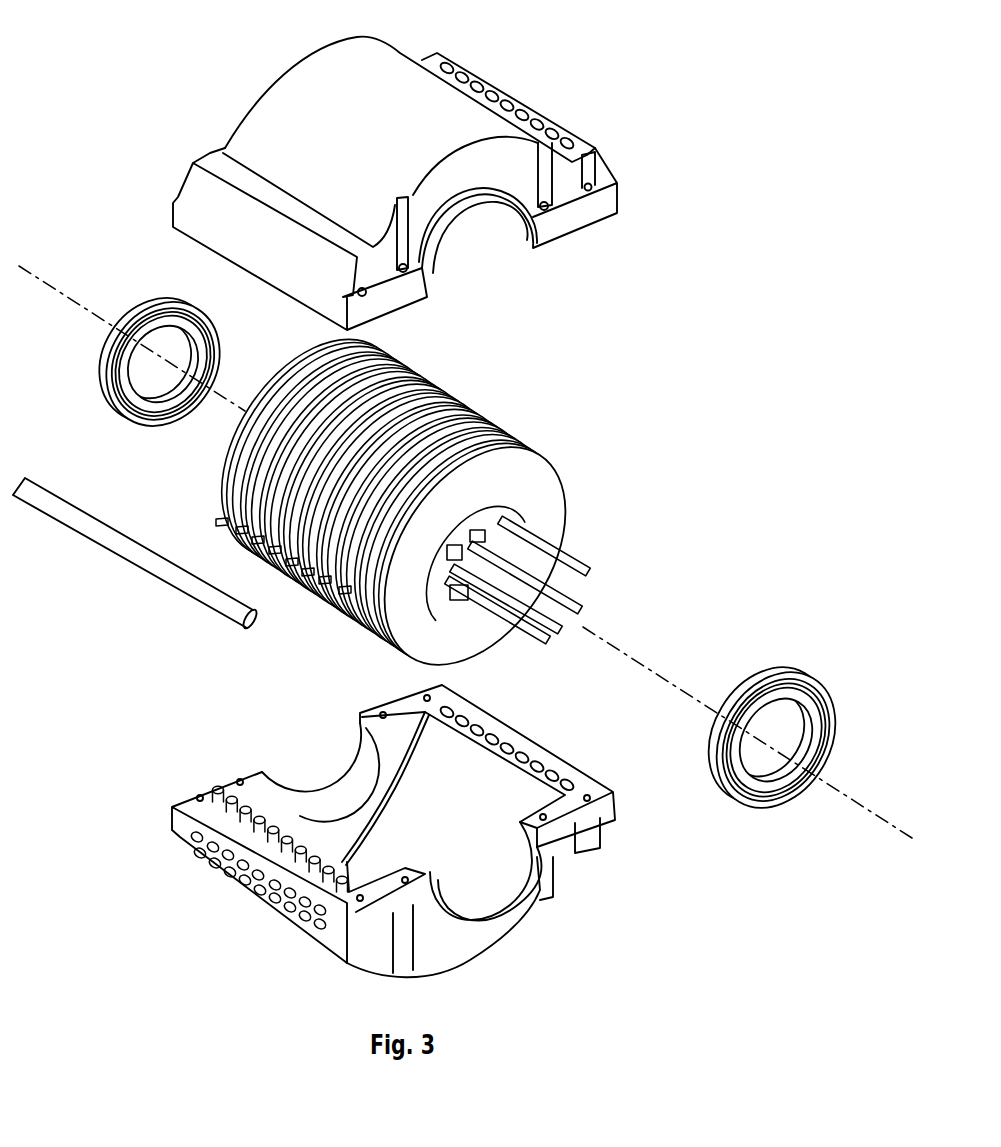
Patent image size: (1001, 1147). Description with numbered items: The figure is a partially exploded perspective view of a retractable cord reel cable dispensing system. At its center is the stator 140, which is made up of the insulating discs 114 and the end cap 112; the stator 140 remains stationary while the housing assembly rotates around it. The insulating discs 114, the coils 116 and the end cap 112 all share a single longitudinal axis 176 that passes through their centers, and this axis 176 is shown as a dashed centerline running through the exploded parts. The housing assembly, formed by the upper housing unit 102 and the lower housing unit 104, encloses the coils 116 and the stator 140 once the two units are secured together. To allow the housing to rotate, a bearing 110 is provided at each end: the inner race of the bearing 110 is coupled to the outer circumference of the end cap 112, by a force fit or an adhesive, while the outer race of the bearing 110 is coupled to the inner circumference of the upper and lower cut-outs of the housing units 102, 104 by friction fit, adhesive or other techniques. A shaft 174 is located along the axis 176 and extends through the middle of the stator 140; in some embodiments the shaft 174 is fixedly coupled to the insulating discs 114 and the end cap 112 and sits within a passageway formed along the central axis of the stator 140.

The upper housing unit 102 is at (320, 60).
The lower housing unit 104 is at (483, 932).
The bearing 110 is at (167, 292).
The end cap 112 is at (470, 515).
The insulating discs 114 is at (527, 467).
The coils 116 is at (485, 410).
The stator 140 is at (287, 615).
The shaft 174 is at (127, 548).
The longitudinal axis 176 is at (650, 658).